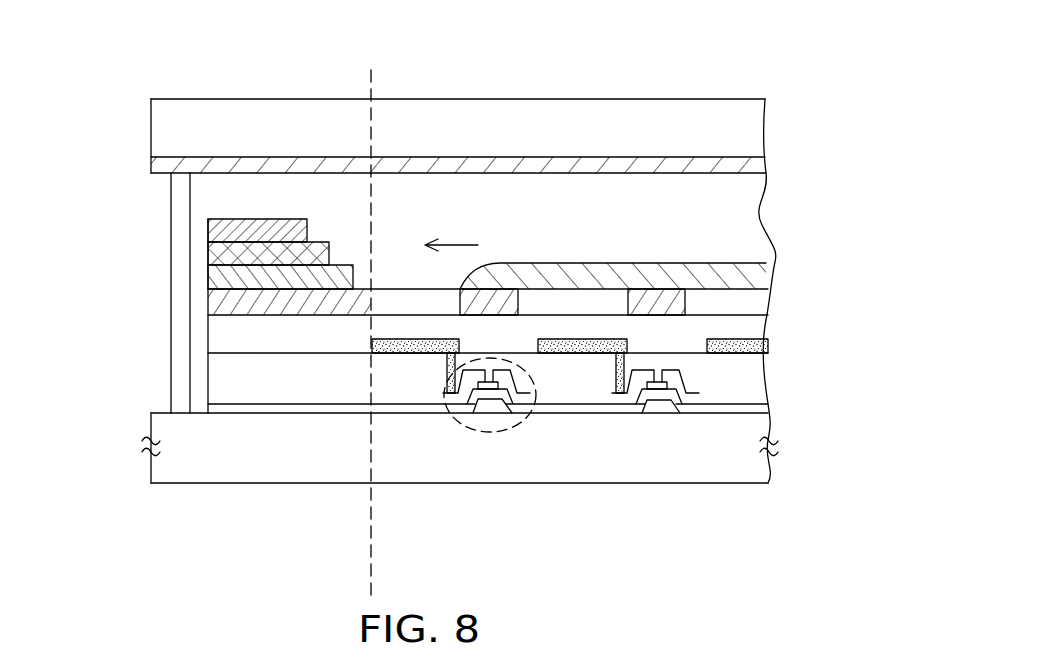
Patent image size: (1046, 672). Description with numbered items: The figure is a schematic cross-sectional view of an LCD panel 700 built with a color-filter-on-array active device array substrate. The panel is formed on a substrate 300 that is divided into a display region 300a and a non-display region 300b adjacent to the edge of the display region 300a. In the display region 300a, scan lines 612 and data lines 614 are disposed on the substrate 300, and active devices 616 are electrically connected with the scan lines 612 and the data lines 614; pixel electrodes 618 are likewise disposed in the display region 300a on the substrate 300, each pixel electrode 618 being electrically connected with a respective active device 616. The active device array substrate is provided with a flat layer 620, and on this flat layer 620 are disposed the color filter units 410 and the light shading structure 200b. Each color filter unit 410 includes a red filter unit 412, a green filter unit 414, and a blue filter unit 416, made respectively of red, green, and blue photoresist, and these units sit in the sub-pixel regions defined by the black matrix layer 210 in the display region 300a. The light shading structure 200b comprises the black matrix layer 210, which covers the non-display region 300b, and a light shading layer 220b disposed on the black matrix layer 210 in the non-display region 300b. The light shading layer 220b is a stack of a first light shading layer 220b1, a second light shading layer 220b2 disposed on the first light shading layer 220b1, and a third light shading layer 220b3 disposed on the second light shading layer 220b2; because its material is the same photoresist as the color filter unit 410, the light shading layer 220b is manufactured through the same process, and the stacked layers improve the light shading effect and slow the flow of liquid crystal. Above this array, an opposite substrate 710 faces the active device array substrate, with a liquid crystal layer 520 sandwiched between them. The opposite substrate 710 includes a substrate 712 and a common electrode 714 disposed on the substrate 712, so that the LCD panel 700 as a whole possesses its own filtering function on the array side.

The LCD panel 700 is at (426, 310).
The opposite substrate 710 is at (458, 90).
The substrate 712 is at (638, 128).
The common electrode 714 is at (703, 163).
The light shading structure 200b is at (401, 219).
The light shading layer 220b is at (194, 240).
The first light shading layer 220b1 is at (225, 278).
The second light shading layer 220b2 is at (208, 257).
The third light shading layer 220b3 is at (208, 228).
The black matrix layer 210 is at (215, 299).
The liquid crystal layer 520 is at (703, 275).
The color filter unit 410 is at (569, 429).
The red filter unit 412 is at (428, 305).
The green filter unit 414 is at (587, 305).
The blue filter unit 416 is at (725, 307).
The flat layer 620 is at (745, 328).
The pixel electrode 618 is at (380, 345).
The active device 616 is at (442, 393).
The scan line 612 is at (485, 405).
The data line 614 is at (527, 393).
The substrate 300 is at (163, 472).
The display region 300a is at (571, 591).
The non-display region 300b is at (367, 571).